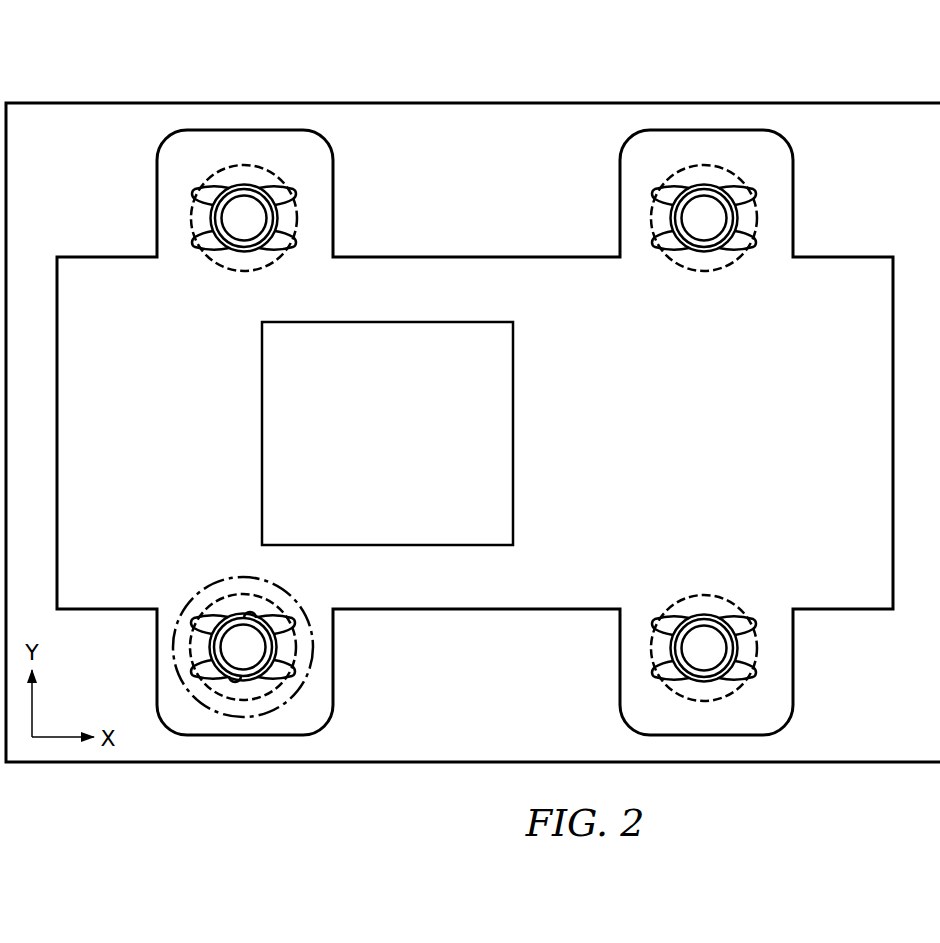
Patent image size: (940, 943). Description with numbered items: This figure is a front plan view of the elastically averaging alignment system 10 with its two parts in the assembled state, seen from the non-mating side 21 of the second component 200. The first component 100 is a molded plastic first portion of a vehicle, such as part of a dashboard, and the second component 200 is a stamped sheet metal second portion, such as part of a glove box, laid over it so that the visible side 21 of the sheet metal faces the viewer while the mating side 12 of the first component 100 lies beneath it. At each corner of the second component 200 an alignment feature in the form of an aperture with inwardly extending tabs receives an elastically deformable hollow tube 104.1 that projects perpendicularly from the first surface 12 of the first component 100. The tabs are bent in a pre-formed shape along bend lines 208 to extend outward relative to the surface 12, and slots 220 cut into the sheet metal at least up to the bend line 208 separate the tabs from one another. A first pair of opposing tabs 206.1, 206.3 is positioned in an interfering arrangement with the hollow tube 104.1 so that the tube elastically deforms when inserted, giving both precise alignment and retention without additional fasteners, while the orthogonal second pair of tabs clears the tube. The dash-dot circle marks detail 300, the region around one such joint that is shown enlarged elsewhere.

The first component 100 is at (473, 424).
The elastically averaging alignment system 10 is at (837, 87).
The mating side of the first alignment member 12 is at (854, 185).
The second component 200 is at (475, 483).
The non-mating side of the second alignment member 21 is at (687, 426).
The slots 220 is at (200, 617).
The tab 206.3 is at (257, 620).
The bend line 208 is at (298, 634).
The tab 206.1 is at (225, 675).
The hollow tube 104.1 is at (288, 675).
The detail 300 is at (288, 718).